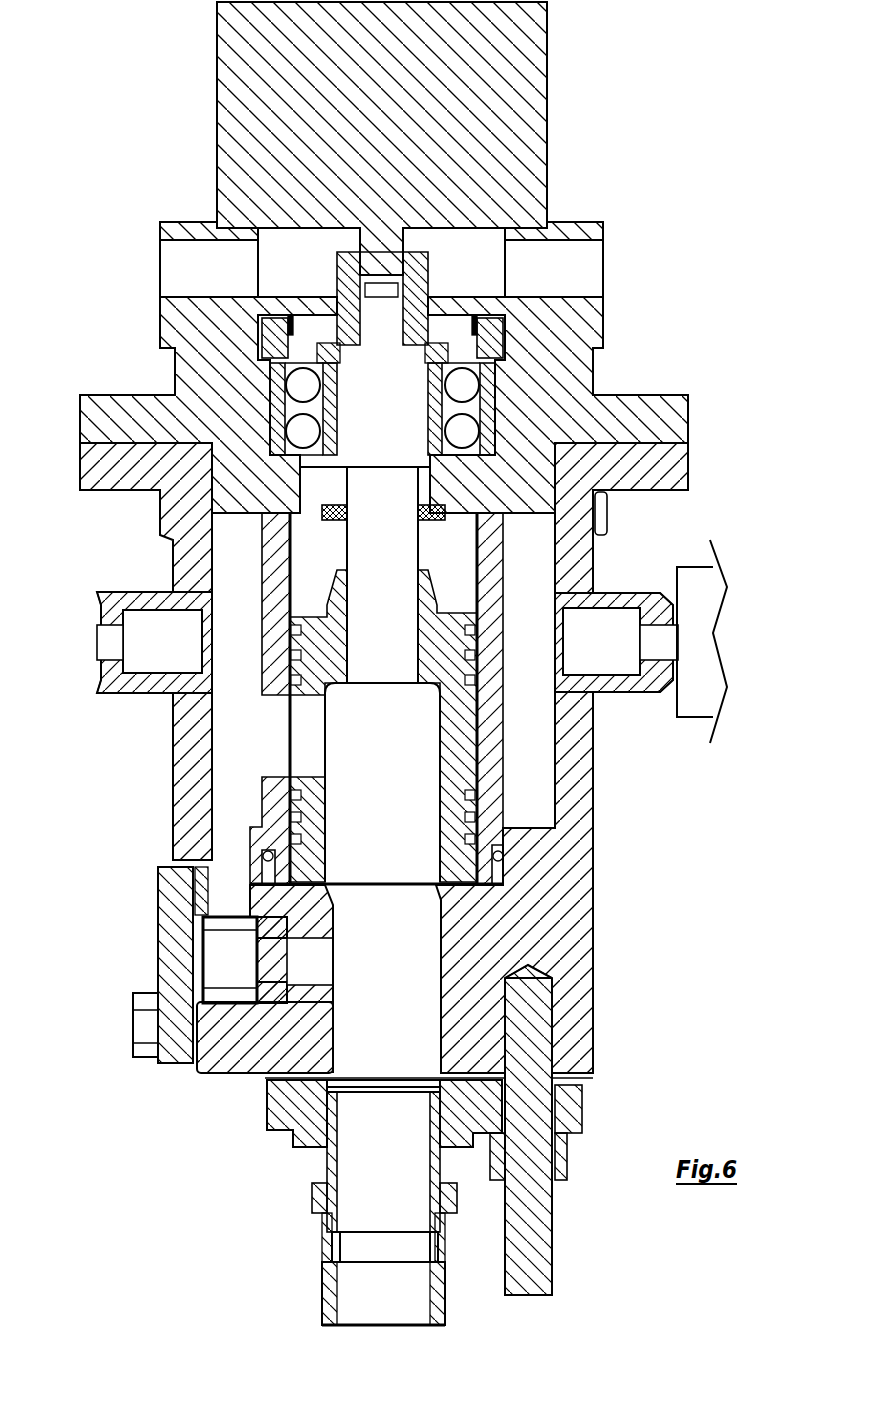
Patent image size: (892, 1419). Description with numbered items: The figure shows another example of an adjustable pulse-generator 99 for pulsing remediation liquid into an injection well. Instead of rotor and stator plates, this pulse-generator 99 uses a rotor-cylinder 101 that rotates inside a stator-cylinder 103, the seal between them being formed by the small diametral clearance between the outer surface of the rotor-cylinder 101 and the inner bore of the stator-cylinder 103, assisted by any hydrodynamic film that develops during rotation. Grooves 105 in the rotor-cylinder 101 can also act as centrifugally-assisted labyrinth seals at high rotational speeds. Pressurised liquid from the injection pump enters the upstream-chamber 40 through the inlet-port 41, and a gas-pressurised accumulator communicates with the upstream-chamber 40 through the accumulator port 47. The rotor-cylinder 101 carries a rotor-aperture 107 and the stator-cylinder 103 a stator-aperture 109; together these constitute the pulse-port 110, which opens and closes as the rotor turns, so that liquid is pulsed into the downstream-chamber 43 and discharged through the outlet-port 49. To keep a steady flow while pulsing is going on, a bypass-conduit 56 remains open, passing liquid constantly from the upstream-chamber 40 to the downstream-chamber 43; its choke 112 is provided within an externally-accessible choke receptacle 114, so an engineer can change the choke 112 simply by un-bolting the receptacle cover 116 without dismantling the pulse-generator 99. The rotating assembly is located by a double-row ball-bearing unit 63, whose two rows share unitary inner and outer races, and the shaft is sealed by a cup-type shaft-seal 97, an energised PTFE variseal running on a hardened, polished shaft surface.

The pulse-generator 99 is at (596, 184).
The double-row ball-bearing unit 63 is at (492, 405).
The cup-type shaft-seal 97 is at (318, 503).
The upstream-chamber 40 is at (518, 578).
The inlet-port 41 is at (178, 661).
The accumulator port 47 is at (615, 655).
The pulse-port 110 is at (263, 722).
The stator-aperture 109 is at (268, 756).
The grooves in rotor-cylinder 105 is at (458, 702).
The rotor-cylinder 101 is at (457, 739).
The rotor-aperture 107 is at (307, 758).
The stator-cylinder 103 is at (493, 729).
The choke receptacle 114 is at (235, 1000).
The receptacle cover 116 is at (167, 977).
The bypass-conduit 56 is at (327, 976).
The downstream-chamber 43 is at (401, 1017).
The outlet-port 49 is at (396, 1186).
The choke 112 is at (270, 1030).